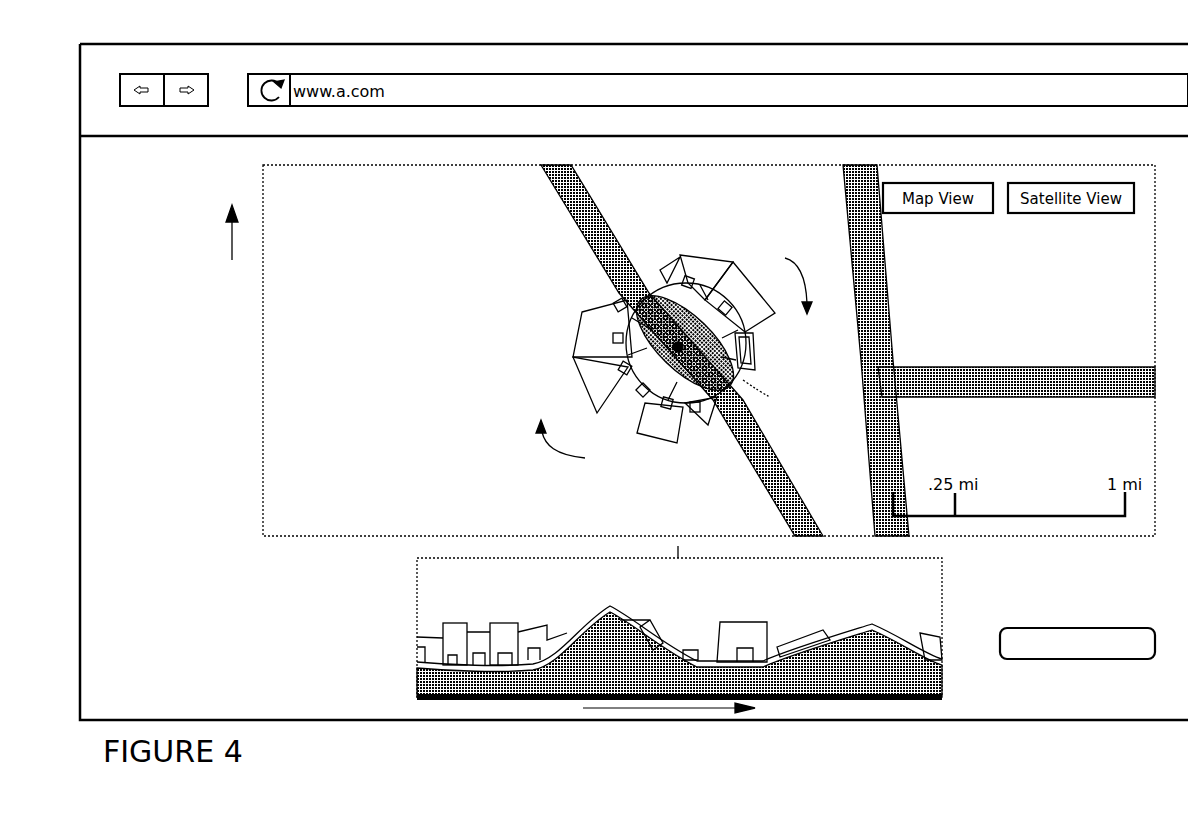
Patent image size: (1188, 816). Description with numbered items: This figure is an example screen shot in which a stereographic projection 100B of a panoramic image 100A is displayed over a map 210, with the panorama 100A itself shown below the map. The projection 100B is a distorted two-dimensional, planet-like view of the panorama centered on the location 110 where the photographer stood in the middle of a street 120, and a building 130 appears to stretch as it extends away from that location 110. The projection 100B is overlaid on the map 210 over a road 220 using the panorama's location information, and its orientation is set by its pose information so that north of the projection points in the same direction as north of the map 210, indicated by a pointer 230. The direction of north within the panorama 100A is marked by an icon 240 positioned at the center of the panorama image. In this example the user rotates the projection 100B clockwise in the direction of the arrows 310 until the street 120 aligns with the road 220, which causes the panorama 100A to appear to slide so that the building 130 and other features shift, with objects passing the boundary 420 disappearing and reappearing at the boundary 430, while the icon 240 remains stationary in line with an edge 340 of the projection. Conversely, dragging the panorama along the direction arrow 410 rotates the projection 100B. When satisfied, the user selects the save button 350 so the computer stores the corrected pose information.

The panoramic image 100A is at (417, 629).
The stereographic projection 100B is at (580, 384).
The location 110 is at (630, 328).
The street 120 is at (737, 384).
The building 130 is at (697, 262).
The map 210 is at (263, 397).
The road 220 is at (608, 223).
The pointer 230 is at (230, 243).
The icon 240 is at (665, 573).
The arrows 310 is at (585, 458).
The edge 340 is at (677, 627).
The save button 350 is at (1022, 662).
The direction arrow 410 is at (663, 712).
The boundary 420 is at (417, 674).
The boundary 430 is at (942, 598).